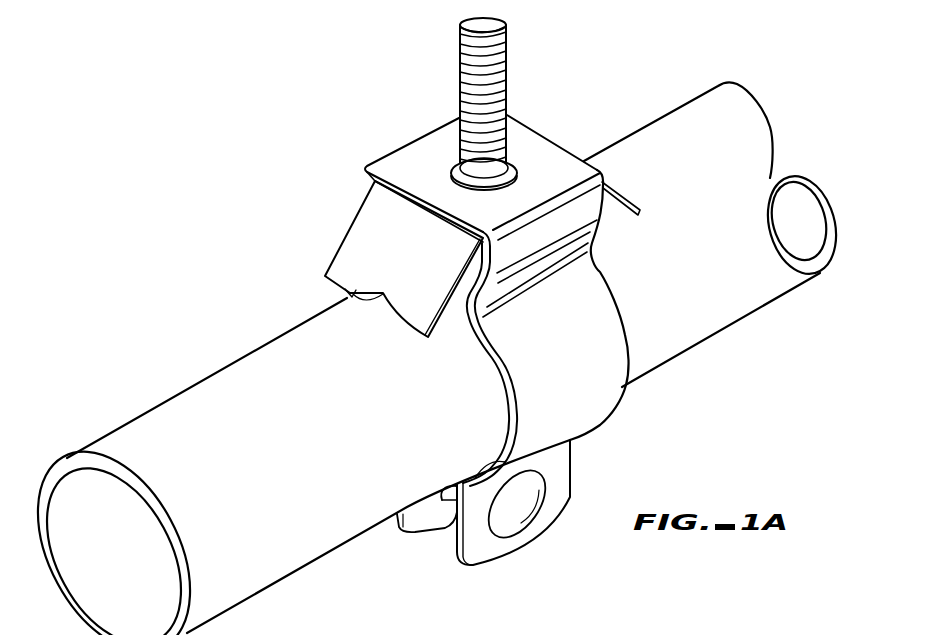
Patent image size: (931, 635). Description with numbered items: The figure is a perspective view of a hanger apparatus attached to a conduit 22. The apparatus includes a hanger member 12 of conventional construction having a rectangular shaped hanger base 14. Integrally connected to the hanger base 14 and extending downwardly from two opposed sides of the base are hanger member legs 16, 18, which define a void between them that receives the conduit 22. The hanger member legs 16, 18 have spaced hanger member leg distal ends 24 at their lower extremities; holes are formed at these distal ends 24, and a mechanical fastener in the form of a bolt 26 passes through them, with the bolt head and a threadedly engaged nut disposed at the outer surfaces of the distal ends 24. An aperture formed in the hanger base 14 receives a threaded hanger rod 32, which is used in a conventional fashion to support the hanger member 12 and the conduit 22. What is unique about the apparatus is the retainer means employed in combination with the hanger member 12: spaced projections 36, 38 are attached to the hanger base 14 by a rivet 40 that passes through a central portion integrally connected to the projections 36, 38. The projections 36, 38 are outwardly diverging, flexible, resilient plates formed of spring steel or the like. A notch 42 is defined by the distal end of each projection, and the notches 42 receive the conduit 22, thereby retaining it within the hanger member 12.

The hanger member 12 is at (610, 282).
The hanger base 14 is at (535, 158).
The hanger member leg 16 is at (417, 527).
The hanger member leg 18 is at (603, 357).
The conduit 22 is at (183, 412).
The hanger member leg distal ends 24 is at (440, 528).
The bolt 26 is at (523, 512).
The threaded hanger rod 32 is at (509, 100).
The projection 36 is at (374, 238).
The projection 38 is at (637, 201).
The rivet 40 is at (453, 172).
The notch 42 is at (348, 293).